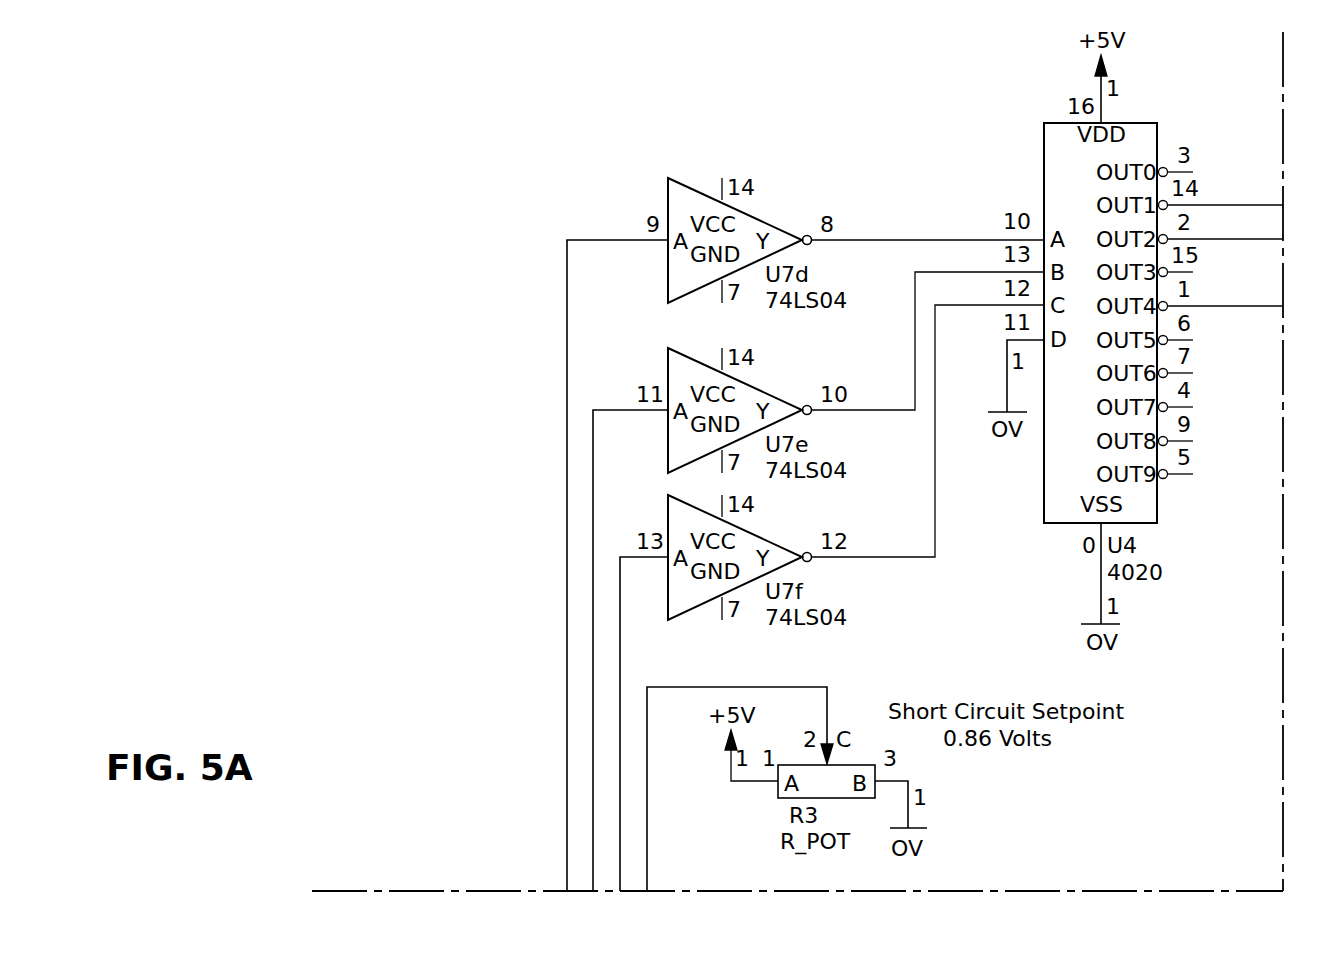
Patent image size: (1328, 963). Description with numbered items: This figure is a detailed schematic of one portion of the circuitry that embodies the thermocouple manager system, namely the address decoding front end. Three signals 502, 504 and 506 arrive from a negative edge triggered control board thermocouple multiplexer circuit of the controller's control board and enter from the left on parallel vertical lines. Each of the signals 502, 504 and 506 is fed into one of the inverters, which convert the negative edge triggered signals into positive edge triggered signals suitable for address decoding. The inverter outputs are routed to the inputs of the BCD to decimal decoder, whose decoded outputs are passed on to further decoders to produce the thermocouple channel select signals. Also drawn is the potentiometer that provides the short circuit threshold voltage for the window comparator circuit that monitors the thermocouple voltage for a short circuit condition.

The negative edge triggered signal 502 is at (567, 240).
The negative edge triggered signal 504 is at (593, 538).
The negative edge triggered signal 506 is at (620, 704).